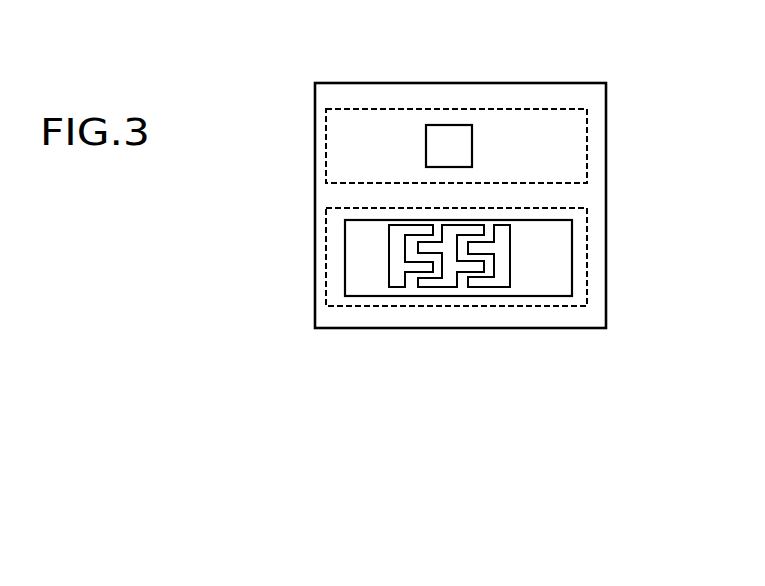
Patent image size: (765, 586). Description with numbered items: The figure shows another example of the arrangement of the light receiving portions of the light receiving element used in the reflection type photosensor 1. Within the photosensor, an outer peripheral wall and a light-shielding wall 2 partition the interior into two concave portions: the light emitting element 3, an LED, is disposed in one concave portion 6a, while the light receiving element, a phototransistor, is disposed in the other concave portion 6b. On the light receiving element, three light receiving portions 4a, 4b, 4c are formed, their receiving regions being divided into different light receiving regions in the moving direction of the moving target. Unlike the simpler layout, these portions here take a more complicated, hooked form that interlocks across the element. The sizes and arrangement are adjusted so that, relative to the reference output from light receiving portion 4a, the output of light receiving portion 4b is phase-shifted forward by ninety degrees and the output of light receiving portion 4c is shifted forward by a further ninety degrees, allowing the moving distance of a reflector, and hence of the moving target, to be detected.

The reflection type photosensor 1 is at (585, 92).
The light-shielding wall 2 is at (325, 195).
The light emitting element 3 is at (445, 135).
The light receiving portion 4a is at (502, 282).
The light receiving portion 4b is at (448, 282).
The light receiving portion 4c is at (400, 282).
The concave portion 6a is at (326, 147).
The concave portion 6b is at (326, 267).